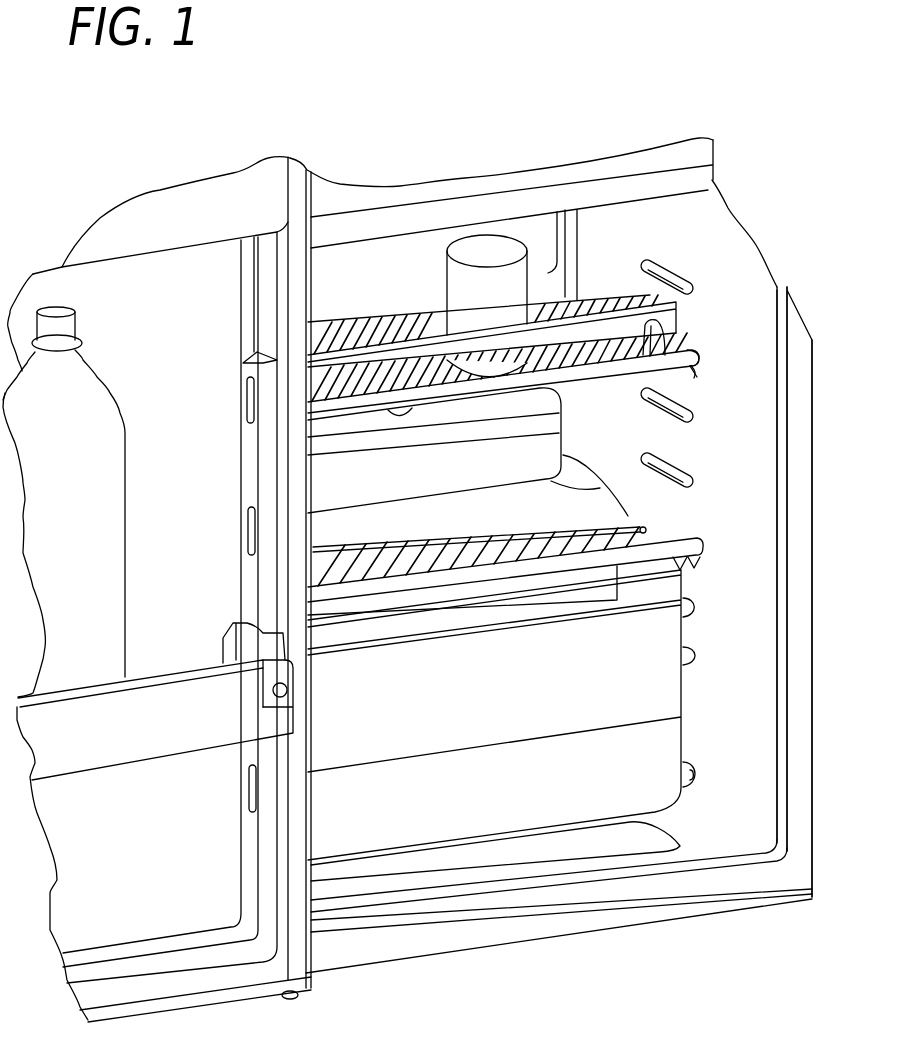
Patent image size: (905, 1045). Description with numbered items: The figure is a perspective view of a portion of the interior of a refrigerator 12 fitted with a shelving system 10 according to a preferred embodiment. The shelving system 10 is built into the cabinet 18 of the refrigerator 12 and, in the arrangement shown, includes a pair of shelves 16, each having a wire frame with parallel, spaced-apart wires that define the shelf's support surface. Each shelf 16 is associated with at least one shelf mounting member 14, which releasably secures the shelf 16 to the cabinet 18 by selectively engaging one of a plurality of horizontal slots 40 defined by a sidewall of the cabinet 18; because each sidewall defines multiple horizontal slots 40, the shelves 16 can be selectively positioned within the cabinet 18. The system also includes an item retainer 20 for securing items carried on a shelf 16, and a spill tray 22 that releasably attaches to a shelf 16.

The shelving system 10 is at (760, 383).
The refrigerator 12 is at (674, 98).
The shelf mounting member 14 is at (695, 392).
The shelf 16 is at (699, 360).
The cabinet 18 is at (752, 634).
The item retainer 20 is at (601, 296).
The spill tray 22 is at (378, 385).
The horizontal slot 40 is at (672, 266).